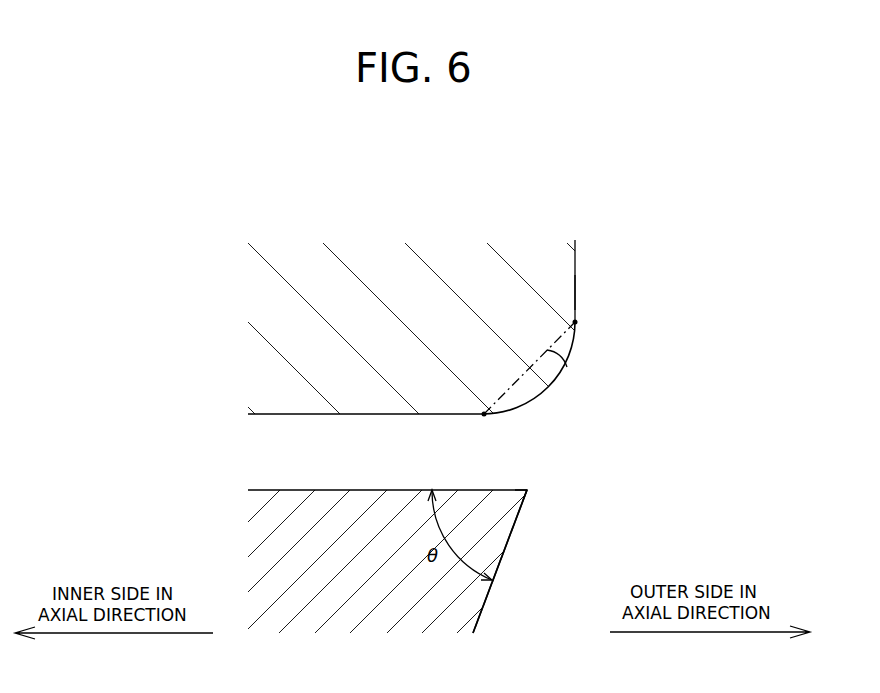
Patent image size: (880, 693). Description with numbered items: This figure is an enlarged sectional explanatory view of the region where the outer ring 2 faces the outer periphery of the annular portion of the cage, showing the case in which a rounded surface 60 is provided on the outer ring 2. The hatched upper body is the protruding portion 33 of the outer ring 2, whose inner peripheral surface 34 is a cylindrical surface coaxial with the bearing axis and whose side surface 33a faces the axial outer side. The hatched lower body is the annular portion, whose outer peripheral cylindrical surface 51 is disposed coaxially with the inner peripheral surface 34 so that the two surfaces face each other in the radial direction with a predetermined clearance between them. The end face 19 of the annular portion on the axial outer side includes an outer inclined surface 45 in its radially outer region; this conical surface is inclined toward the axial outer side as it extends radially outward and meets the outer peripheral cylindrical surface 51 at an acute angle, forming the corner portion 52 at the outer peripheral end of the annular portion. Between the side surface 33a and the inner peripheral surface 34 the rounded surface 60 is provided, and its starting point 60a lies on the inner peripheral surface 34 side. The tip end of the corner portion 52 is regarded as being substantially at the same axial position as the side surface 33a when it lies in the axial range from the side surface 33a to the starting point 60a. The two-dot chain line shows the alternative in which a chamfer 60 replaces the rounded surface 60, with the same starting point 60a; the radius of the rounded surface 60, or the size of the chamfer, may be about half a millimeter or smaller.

The outer ring 2 is at (577, 268).
The protruding portion 33 is at (535, 304).
The side surface 33a is at (577, 287).
The inner peripheral surface 34 is at (316, 416).
The rounded surface 60 is at (558, 378).
The starting point 60a is at (483, 416).
The outer peripheral cylindrical surface 51 is at (301, 490).
The corner portion 52 is at (527, 490).
The end face 19 is at (510, 540).
The outer inclined surface 45 is at (500, 561).